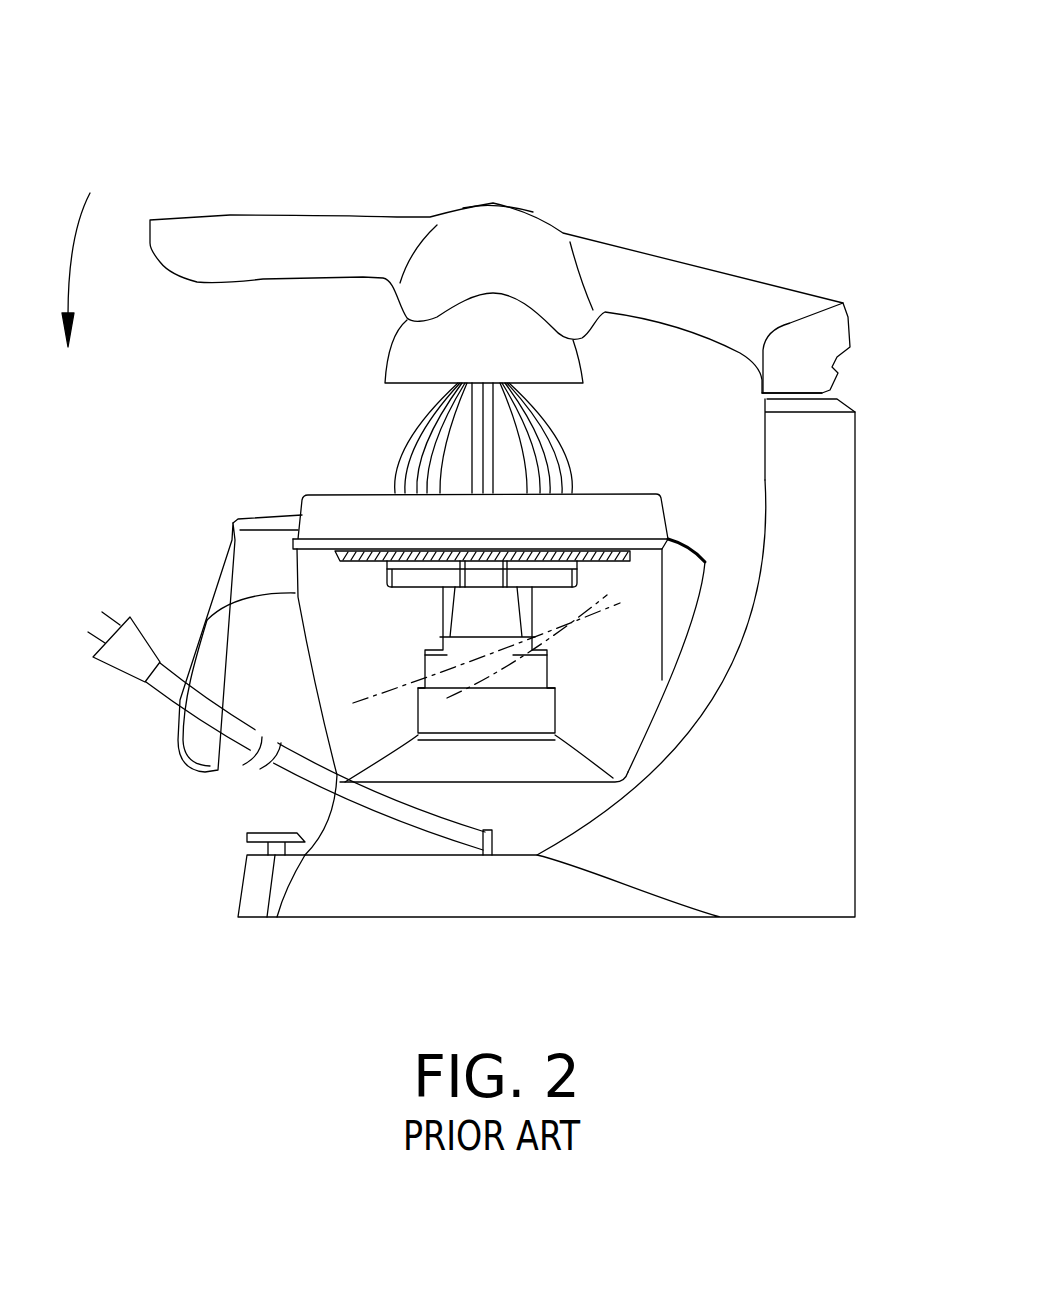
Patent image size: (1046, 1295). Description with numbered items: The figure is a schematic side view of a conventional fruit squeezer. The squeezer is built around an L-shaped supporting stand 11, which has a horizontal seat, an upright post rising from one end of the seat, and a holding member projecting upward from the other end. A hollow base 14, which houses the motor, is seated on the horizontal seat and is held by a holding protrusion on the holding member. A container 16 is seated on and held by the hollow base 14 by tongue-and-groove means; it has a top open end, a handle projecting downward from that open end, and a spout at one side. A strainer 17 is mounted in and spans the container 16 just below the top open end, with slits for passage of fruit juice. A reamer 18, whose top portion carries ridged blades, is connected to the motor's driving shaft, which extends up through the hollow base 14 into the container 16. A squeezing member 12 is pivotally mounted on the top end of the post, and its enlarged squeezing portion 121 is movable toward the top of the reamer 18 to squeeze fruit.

The supporting stand 11 is at (855, 857).
The squeezing member 12 is at (687, 280).
The enlarged squeezing portion 121 is at (502, 240).
The hollow base 14 is at (552, 805).
The container 16 is at (263, 523).
The strainer 17 is at (625, 517).
The reamer 18 is at (542, 448).